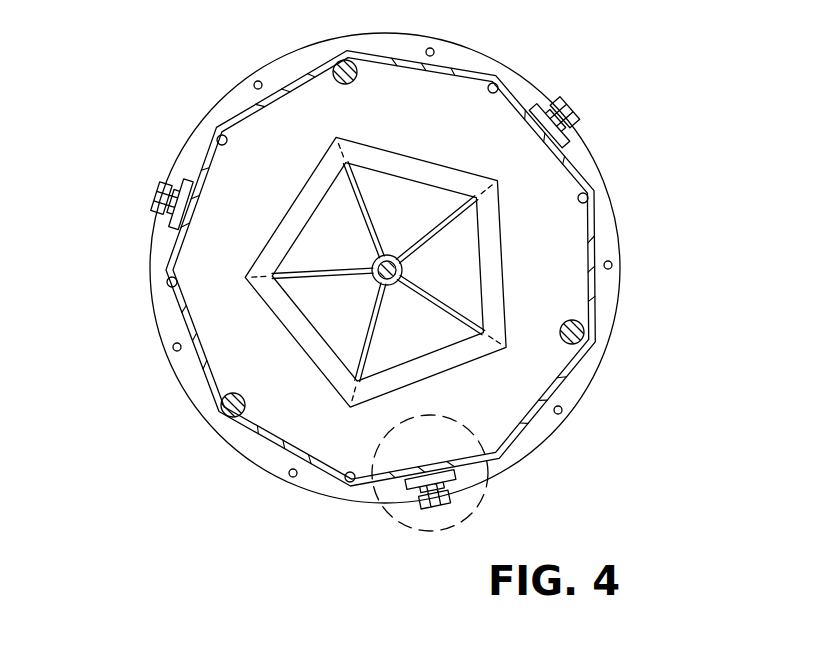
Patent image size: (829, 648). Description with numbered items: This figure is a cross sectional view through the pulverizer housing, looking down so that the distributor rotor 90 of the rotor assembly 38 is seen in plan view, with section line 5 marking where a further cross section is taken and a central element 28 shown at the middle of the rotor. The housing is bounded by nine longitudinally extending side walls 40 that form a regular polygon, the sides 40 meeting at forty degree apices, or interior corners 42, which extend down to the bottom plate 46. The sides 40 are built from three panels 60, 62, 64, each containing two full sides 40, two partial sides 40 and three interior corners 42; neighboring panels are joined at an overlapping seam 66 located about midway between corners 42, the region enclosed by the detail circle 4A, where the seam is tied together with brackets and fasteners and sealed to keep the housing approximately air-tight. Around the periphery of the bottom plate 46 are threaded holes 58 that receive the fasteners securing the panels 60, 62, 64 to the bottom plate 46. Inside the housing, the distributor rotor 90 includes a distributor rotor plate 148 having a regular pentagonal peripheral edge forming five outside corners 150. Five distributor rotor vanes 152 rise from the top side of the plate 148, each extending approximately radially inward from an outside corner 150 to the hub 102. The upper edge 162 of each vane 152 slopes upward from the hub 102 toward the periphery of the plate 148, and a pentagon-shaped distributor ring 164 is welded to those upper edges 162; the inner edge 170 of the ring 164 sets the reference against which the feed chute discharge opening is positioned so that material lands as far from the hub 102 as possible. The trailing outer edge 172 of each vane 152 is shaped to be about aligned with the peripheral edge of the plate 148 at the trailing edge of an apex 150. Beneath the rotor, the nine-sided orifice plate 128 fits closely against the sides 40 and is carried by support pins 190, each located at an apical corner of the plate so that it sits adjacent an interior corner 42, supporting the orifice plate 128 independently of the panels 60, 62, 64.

The section line 5- 5 is at (135, 238).
The hub 28 is at (378, 283).
The rotor assembly 38 is at (521, 293).
The side walls 40 is at (290, 80).
The interior corners 42 is at (500, 88).
The bottom plate 46 is at (605, 302).
The threaded holes 58 is at (252, 87).
The panel 60 is at (566, 373).
The panel 62 is at (208, 388).
The panel 64 is at (388, 48).
The overlapping seam 66 is at (422, 477).
The distributor rotor 90 is at (508, 260).
The hub 102 is at (397, 287).
The orifice plate 128 is at (278, 374).
The distributor rotor plate 148 is at (415, 197).
The outside corners 150 is at (338, 137).
The distributor rotor vanes 152 is at (307, 268).
The upper edge 162 is at (358, 185).
The distributor ring 164 is at (462, 186).
The inner edge 170 is at (475, 237).
The trailing outer edge 172 is at (247, 275).
The support pins 190 is at (587, 318).
The detail view 4A is at (430, 480).